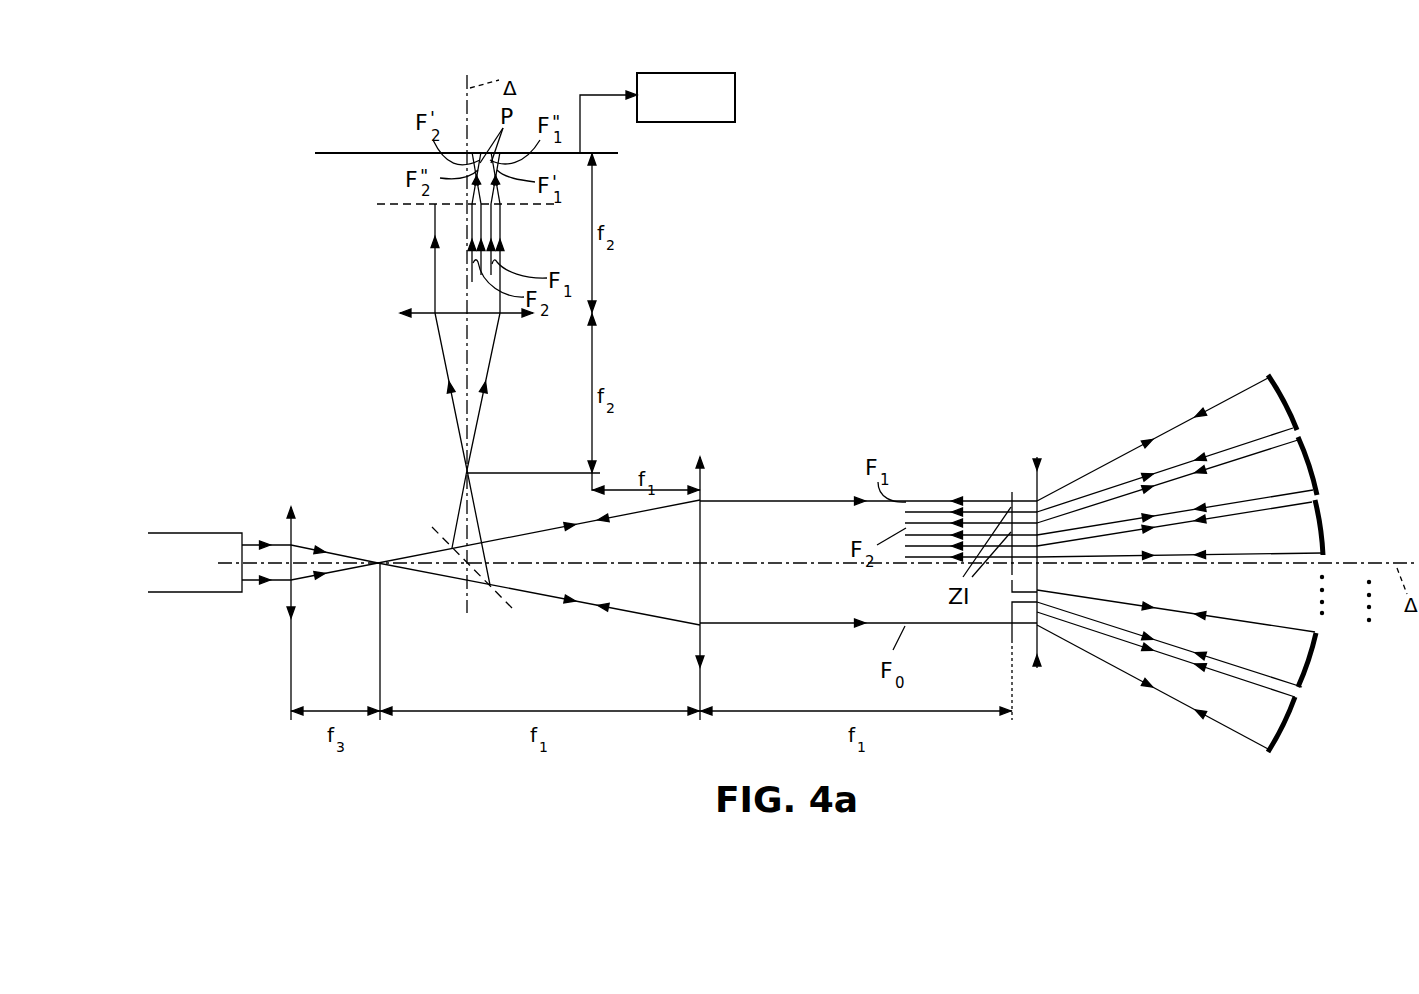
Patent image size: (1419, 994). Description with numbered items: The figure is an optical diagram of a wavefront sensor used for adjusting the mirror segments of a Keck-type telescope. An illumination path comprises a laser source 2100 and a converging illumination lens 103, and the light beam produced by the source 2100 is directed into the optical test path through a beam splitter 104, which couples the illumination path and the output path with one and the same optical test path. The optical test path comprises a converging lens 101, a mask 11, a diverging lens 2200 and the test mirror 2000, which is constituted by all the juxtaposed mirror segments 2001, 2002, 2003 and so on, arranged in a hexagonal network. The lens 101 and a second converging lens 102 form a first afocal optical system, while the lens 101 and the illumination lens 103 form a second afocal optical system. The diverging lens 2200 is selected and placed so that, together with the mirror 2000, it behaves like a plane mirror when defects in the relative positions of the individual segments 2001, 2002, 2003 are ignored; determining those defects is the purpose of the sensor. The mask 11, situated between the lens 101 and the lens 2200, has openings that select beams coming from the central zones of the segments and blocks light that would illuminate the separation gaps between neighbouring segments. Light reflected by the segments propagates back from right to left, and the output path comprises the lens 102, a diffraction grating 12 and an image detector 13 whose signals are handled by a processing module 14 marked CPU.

The laser source 2100 is at (174, 593).
The converging illumination lens 103 is at (293, 533).
The beam splitter 104 is at (499, 598).
The converging lens 101 is at (702, 637).
The converging lens 102 is at (423, 317).
The diffraction grating 12 is at (402, 207).
The image detector 13 is at (332, 156).
The processing module 14 is at (717, 123).
The mask with separate openings 11 is at (1010, 494).
The diverging lens 2200 is at (1035, 486).
The test mirror 2000 is at (1379, 357).
The mirror segment 2001 is at (1290, 398).
The mirror segment 2002 is at (1312, 466).
The mirror segment 2003 is at (1327, 533).